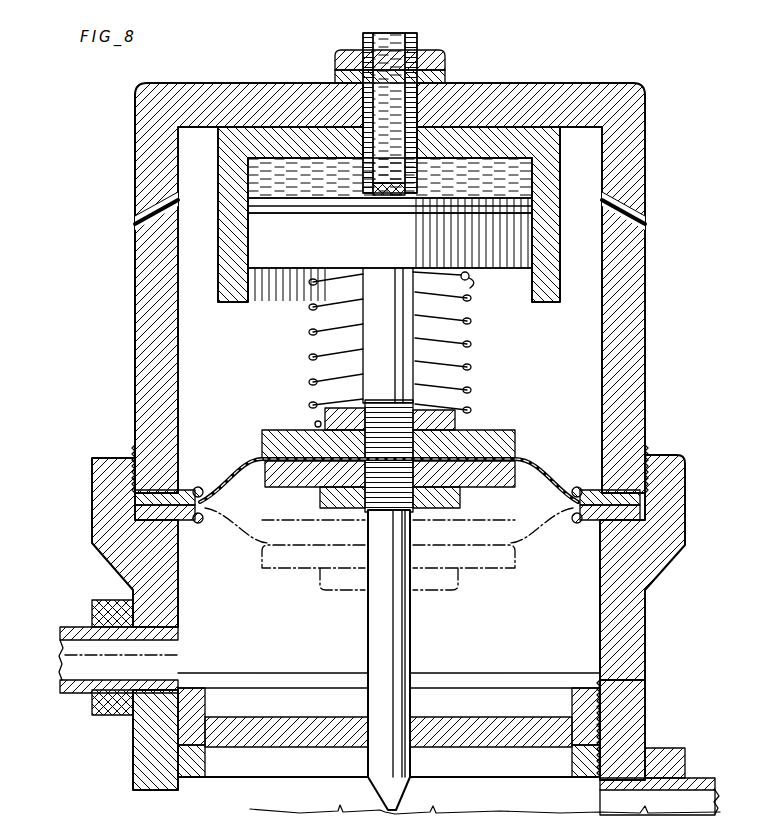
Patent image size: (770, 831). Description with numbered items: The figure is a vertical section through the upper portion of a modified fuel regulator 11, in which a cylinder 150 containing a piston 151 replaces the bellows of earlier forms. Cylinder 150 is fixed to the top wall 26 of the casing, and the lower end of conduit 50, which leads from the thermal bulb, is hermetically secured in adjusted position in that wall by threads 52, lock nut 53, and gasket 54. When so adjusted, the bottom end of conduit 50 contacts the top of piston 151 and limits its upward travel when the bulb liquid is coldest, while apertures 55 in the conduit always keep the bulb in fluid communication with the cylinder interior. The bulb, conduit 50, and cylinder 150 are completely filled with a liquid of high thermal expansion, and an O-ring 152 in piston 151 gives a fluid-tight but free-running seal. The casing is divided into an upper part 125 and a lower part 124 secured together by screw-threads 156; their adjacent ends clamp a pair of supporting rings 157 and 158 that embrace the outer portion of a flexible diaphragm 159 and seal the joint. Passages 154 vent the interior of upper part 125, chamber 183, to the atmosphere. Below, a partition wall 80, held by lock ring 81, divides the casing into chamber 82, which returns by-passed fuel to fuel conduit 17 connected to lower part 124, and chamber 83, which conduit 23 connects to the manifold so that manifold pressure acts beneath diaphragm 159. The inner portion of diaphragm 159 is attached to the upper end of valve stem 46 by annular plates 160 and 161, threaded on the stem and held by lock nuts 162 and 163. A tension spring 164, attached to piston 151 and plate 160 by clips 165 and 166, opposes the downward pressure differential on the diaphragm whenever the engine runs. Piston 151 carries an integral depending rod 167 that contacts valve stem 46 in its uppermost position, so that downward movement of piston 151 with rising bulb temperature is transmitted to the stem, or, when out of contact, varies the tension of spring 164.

The fuel regulator 11 is at (655, 97).
The top wall 26 is at (258, 95).
The screw-threads 52 is at (362, 103).
The conduit 50 is at (420, 42).
The lock nut 53 is at (445, 56).
The gasket 54 is at (448, 78).
The apertures 55 is at (390, 186).
The cylinder 150 is at (553, 160).
The piston 151 is at (398, 249).
The O-ring 152 is at (318, 214).
The passages 154 is at (135, 230).
The upper part of casing 125 is at (150, 360).
The tension spring 164 is at (468, 341).
The clip 165 is at (472, 280).
The depending rod 167 is at (372, 335).
The chamber 183 is at (556, 375).
The lock nut 162 is at (455, 418).
The clip 166 is at (320, 422).
The annular plate 160 is at (515, 436).
The annular plate 161 is at (308, 487).
The lock nut 163 is at (460, 498).
The flexible diaphragm 159 is at (240, 458).
The supporting ring 157 is at (200, 489).
The supporting ring 158 is at (200, 522).
The screw-threads 156 is at (92, 456).
The conduit 23 is at (60, 660).
The lower part of casing 124 is at (140, 755).
The fuel conduit 17 is at (712, 778).
The chamber 83 is at (290, 665).
The partition wall 80 is at (312, 717).
The lock ring 81 is at (205, 764).
The chamber 82 is at (265, 788).
The valve stem 46 is at (372, 620).